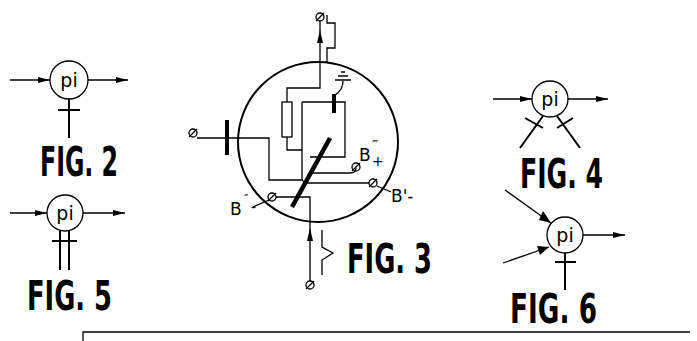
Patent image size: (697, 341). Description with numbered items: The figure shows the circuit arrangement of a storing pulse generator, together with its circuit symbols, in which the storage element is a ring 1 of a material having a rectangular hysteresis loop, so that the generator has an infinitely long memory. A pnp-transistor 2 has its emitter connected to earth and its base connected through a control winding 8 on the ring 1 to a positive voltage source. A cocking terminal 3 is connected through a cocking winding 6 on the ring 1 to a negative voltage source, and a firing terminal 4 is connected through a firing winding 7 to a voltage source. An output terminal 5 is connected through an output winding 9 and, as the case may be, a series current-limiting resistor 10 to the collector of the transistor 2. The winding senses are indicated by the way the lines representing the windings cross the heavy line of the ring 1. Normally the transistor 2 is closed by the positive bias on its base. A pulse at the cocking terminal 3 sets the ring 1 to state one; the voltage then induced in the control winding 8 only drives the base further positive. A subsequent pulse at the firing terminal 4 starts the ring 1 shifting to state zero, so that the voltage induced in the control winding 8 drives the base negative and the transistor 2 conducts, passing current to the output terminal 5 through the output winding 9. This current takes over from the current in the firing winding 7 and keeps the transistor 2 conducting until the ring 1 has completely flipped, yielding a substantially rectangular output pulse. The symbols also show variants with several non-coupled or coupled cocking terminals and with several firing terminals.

The ring 1 is at (321, 146).
The pnp-transistor 2 is at (338, 105).
The cocking terminal 3 is at (245, 143).
The firing terminal 4 is at (306, 285).
The output terminal 5 is at (316, 18).
The cocking winding 6 is at (337, 184).
The firing winding 7 is at (300, 202).
The control winding 8 is at (330, 174).
The output winding 9 is at (346, 146).
The current-limiting resistor 10 is at (282, 122).